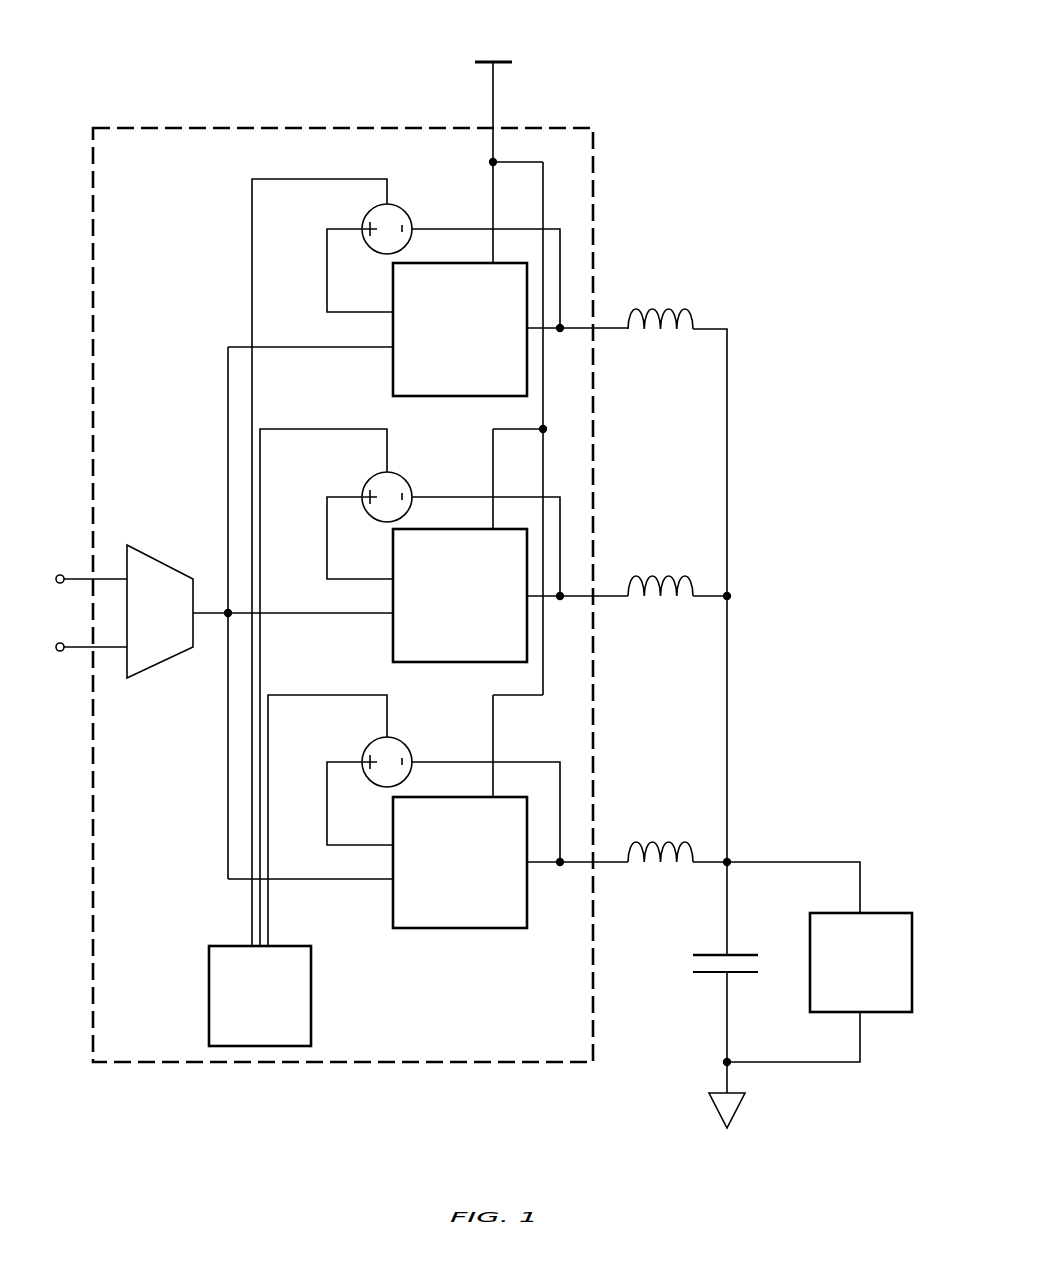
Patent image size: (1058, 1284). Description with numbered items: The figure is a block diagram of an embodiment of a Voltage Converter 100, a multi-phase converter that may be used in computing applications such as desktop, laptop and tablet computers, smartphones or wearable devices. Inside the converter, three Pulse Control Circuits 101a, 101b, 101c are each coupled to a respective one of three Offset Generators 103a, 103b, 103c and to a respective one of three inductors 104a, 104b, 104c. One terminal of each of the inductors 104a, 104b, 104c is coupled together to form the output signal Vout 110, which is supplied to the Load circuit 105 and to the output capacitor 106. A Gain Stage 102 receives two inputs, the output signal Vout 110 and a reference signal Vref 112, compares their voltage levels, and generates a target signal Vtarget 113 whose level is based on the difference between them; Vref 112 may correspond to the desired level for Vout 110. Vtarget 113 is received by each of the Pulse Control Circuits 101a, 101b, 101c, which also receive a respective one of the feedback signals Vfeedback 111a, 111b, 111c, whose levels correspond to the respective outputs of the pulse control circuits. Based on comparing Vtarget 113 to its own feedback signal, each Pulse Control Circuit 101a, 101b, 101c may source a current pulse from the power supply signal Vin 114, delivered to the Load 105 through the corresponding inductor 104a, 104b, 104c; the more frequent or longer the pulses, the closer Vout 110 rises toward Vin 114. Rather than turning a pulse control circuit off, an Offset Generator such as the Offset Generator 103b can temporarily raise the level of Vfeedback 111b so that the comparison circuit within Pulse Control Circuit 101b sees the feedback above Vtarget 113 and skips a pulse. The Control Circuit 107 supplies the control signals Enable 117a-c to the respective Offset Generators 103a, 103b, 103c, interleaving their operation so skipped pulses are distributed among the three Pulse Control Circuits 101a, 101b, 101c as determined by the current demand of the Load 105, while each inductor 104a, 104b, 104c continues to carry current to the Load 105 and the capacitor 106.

The voltage converter 100 is at (283, 160).
The pulse control circuit 101a is at (478, 360).
The pulse control circuit 101b is at (478, 626).
The pulse control circuit 101c is at (478, 893).
The gain stage 102 is at (147, 641).
The offset generator 103a is at (423, 216).
The offset generator 103b is at (423, 483).
The offset generator 103c is at (423, 749).
The inductor L 104a is at (684, 292).
The inductor L 104b is at (684, 560).
The inductor L 104c is at (684, 826).
The load circuit 105 is at (848, 981).
The capacitor C 106 is at (781, 1005).
The control circuit 107 is at (247, 1026).
The Vout 110 is at (808, 848).
The Vfeedback signal 111a is at (283, 248).
The Vfeedback signal 111b is at (280, 516).
The Vfeedback signal 111c is at (283, 781).
The Vref 112 is at (47, 705).
The Vtarget 113 is at (181, 473).
The Vin 114 is at (480, 56).
The Enable control signals 117a-c is at (198, 940).